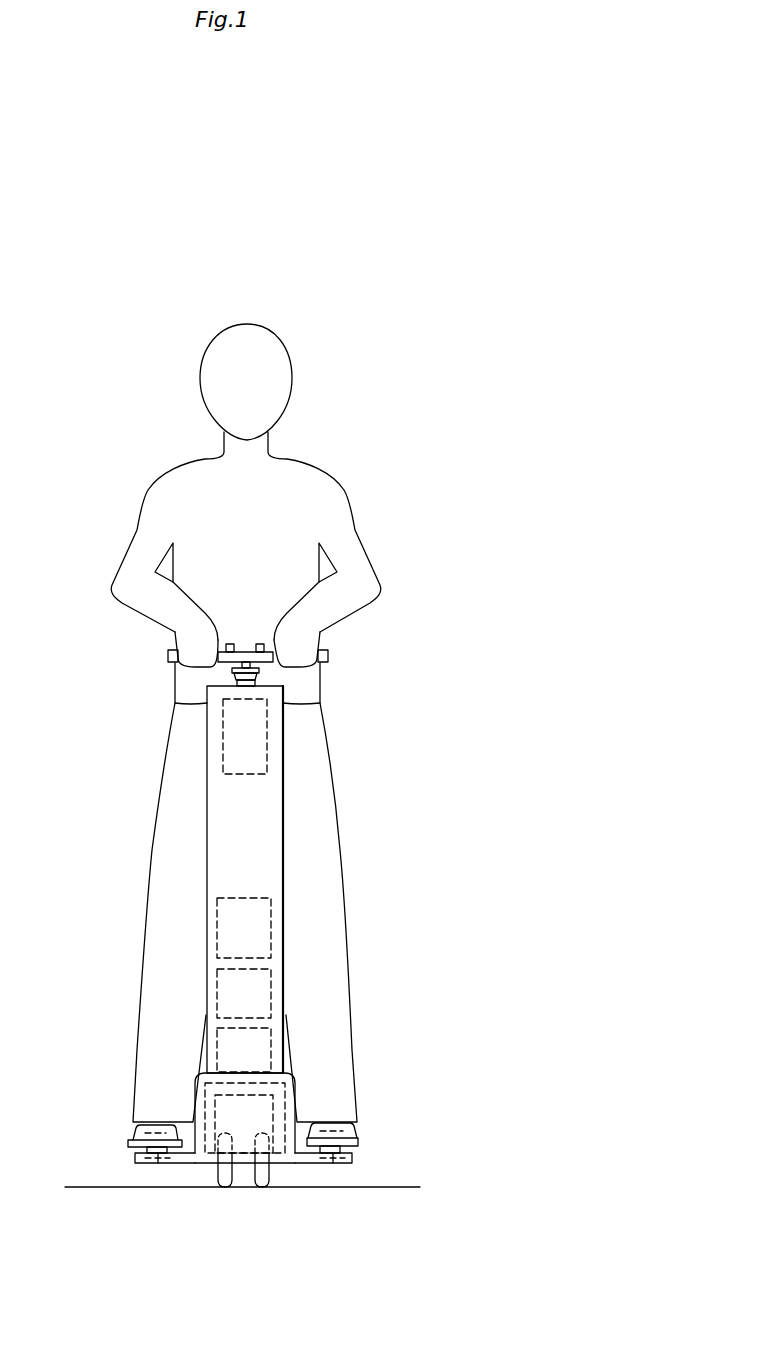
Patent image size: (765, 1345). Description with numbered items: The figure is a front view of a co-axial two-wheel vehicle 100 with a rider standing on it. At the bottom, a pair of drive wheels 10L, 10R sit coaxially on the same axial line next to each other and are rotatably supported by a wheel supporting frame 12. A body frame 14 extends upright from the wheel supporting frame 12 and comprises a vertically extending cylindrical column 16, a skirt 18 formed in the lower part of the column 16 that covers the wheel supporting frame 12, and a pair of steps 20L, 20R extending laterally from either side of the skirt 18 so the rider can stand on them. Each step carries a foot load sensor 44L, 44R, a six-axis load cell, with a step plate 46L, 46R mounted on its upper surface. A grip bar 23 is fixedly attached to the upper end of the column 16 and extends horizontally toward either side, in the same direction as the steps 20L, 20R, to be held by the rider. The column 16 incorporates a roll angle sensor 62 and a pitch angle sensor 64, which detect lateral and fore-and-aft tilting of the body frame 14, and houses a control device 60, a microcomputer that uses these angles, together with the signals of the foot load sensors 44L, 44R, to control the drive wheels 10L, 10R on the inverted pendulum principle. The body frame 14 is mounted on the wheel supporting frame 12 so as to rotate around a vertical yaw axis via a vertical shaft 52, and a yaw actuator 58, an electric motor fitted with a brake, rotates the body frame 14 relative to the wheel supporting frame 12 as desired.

The co-axial two-wheel vehicle 100 is at (440, 683).
The grip bar 23 is at (330, 657).
The body frame 14 is at (287, 817).
The cylindrical column 16 is at (283, 860).
The control device 60 is at (267, 730).
The roll angle sensor 62 is at (233, 898).
The pitch angle sensor 64 is at (272, 976).
The yaw actuator 58 is at (272, 1043).
The vertical shaft 52 is at (252, 1073).
The skirt 18 is at (197, 1083).
The wheel supporting frame 12 is at (207, 1102).
The left step plate 46L is at (130, 1142).
The right step plate 46R is at (358, 1142).
The left step 20L is at (135, 1154).
The right step 20R is at (352, 1150).
The left foot load sensor 44L is at (158, 1163).
The right foot load sensor 44R is at (332, 1163).
The left drive wheel 10L is at (213, 1177).
The right drive wheel 10R is at (276, 1180).